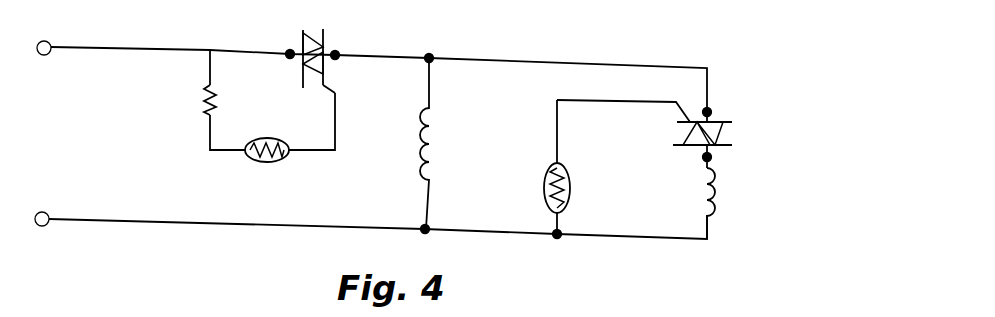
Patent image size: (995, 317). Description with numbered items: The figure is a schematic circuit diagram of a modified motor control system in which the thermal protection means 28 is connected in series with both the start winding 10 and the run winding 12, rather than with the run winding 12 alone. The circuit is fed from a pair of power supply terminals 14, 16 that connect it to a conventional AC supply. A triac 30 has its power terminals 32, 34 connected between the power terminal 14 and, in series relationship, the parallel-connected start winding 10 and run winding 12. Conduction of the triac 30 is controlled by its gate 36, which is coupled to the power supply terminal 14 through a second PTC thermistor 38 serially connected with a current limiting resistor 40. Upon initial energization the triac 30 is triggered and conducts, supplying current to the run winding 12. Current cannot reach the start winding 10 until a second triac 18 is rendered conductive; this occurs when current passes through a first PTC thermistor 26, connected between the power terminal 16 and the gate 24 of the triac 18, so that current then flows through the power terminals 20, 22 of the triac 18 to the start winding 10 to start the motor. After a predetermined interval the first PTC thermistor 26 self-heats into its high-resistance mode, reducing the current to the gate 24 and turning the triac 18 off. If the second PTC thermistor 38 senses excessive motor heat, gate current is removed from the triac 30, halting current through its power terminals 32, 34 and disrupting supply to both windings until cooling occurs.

The start winding 10 is at (714, 200).
The run winding 12 is at (433, 165).
The power supply terminal 14 is at (49, 43).
The power supply terminal 16 is at (48, 214).
The first current switch means 18 is at (733, 134).
The power terminal 20 is at (709, 157).
The power terminal 22 is at (709, 111).
The control terminal 24 is at (686, 108).
The temperature-responsive element 26 is at (570, 186).
The thermal protection means 28 is at (270, 110).
The selectively energizable switch 30 is at (303, 30).
The power terminal 32 is at (290, 53).
The power terminal 34 is at (336, 54).
The gate 36 is at (336, 85).
The second temperature-sensitive element 38 is at (265, 162).
The current limiting resistor 40 is at (207, 88).